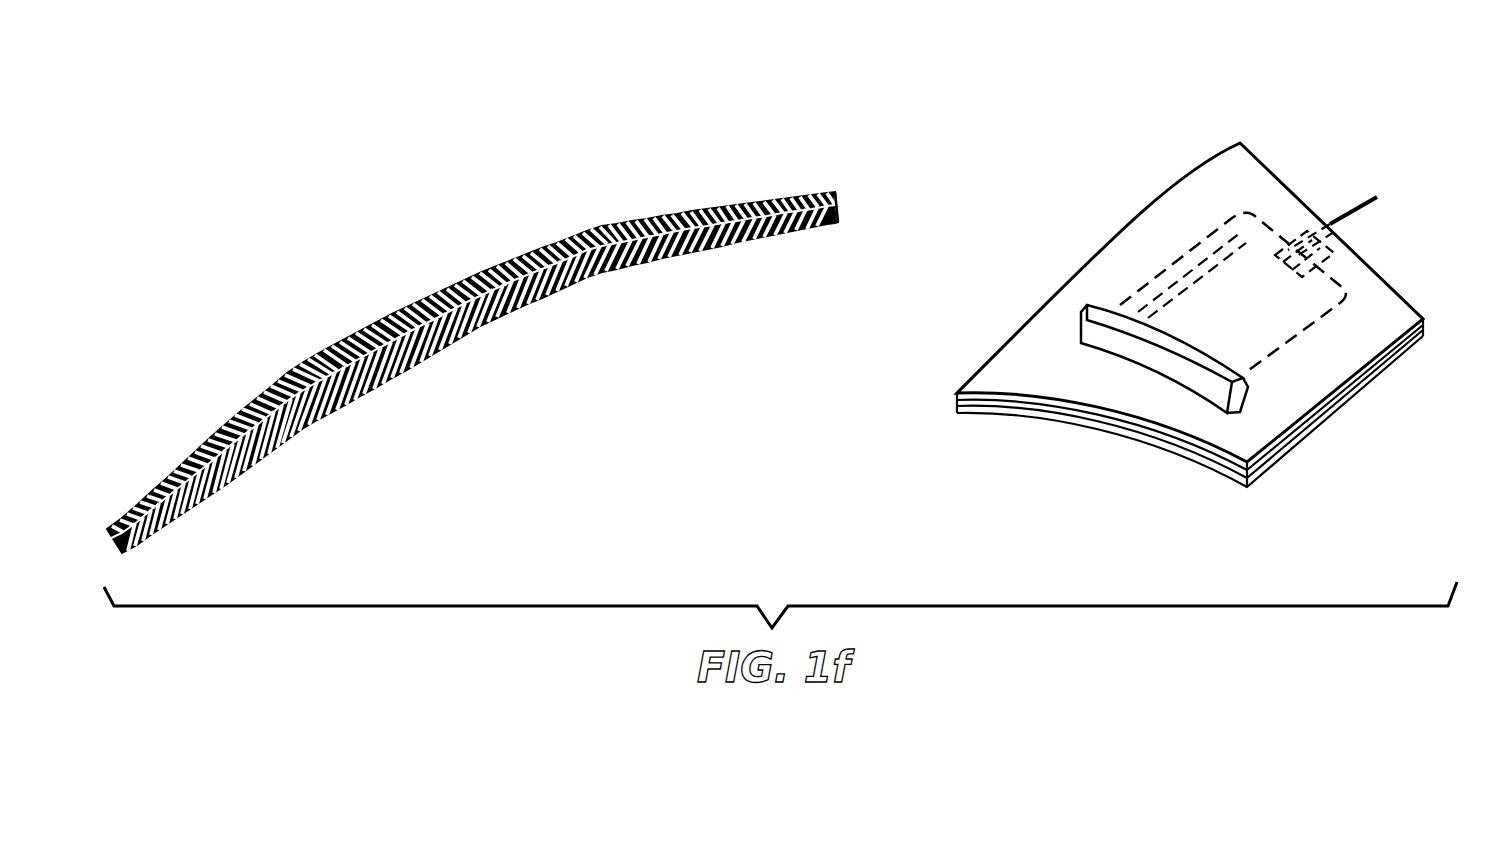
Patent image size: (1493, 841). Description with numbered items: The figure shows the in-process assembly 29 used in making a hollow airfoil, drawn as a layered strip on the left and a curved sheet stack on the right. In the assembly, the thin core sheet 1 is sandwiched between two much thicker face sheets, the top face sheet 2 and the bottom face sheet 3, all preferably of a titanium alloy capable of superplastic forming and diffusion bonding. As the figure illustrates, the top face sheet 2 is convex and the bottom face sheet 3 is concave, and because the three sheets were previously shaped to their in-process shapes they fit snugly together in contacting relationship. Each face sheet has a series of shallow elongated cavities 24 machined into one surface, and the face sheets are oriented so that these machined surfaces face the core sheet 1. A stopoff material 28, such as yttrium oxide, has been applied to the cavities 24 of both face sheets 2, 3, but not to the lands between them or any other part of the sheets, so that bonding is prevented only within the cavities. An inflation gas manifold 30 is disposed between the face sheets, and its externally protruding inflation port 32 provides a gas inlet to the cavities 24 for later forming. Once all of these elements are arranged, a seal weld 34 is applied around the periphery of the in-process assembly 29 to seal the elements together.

The core sheet 1 is at (705, 218).
The face sheet 2 is at (238, 416).
The face sheet 3 is at (632, 270).
The elongated cavities 24 is at (562, 250).
The stopoff material 28 is at (497, 320).
The in-process assembly 29 is at (437, 243).
The inflation gas manifold 30 is at (1282, 235).
The inflation port 32 is at (1372, 196).
The seal weld 34 is at (838, 206).